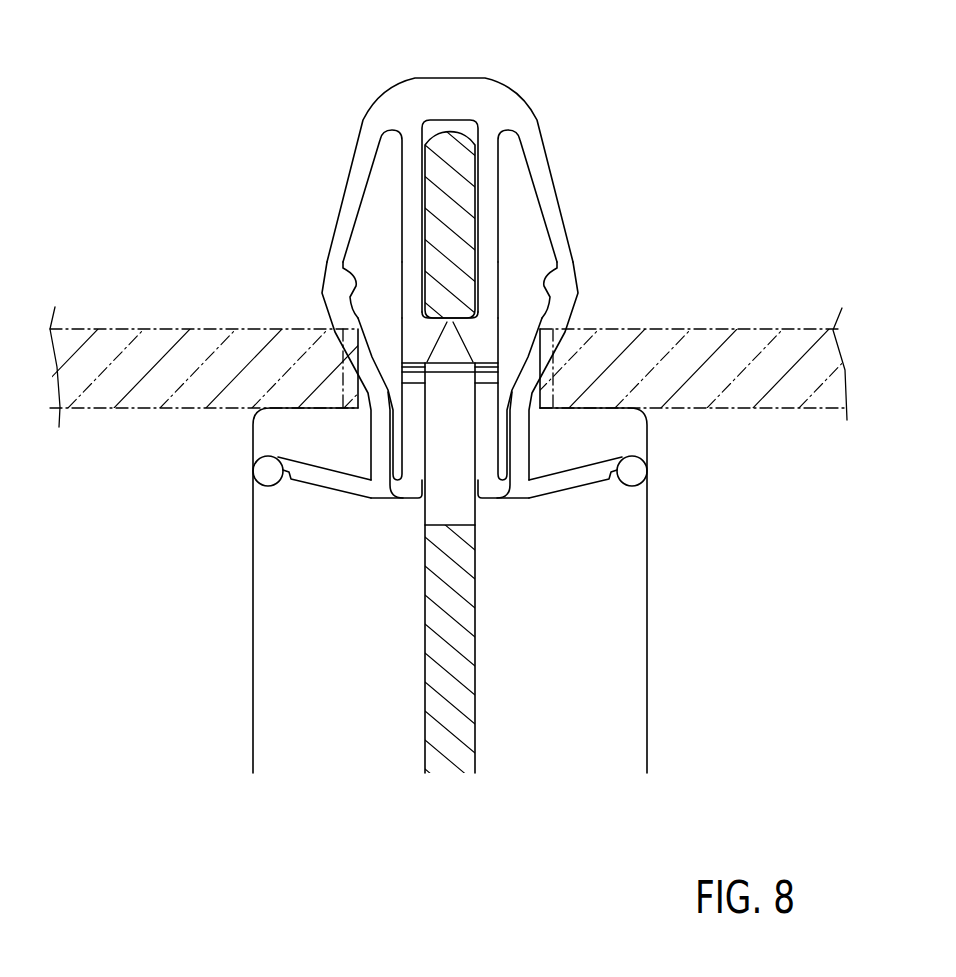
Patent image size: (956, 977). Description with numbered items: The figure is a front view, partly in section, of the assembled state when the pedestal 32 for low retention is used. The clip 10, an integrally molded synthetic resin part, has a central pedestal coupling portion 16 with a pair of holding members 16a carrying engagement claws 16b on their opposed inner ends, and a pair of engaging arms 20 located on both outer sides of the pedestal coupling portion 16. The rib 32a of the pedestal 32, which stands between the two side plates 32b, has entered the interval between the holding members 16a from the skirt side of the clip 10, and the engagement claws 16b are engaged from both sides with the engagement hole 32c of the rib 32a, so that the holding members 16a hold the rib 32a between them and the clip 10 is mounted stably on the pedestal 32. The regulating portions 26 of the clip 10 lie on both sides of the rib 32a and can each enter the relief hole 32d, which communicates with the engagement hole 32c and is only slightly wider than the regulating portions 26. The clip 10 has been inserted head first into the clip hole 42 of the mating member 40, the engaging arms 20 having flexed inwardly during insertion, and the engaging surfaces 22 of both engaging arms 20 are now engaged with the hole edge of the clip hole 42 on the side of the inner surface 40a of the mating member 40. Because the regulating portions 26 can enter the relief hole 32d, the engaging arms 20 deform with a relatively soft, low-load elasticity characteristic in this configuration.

The clip 10 is at (367, 78).
The pedestal coupling portion 16 is at (380, 222).
The holding members 16a is at (413, 188).
The engagement claws 16b is at (447, 328).
The engaging arms 20 is at (333, 245).
The engaging surfaces 22 is at (352, 383).
The regulating portions 26 is at (412, 428).
The pedestal for low retention 32 is at (208, 633).
The rib 32a is at (453, 180).
The side plates 32b is at (632, 618).
The engagement hole 32c is at (452, 355).
The relief hole 32d is at (428, 503).
The mating member 40 is at (107, 393).
The inner surface 40a is at (773, 330).
The clip hole 42 is at (345, 382).